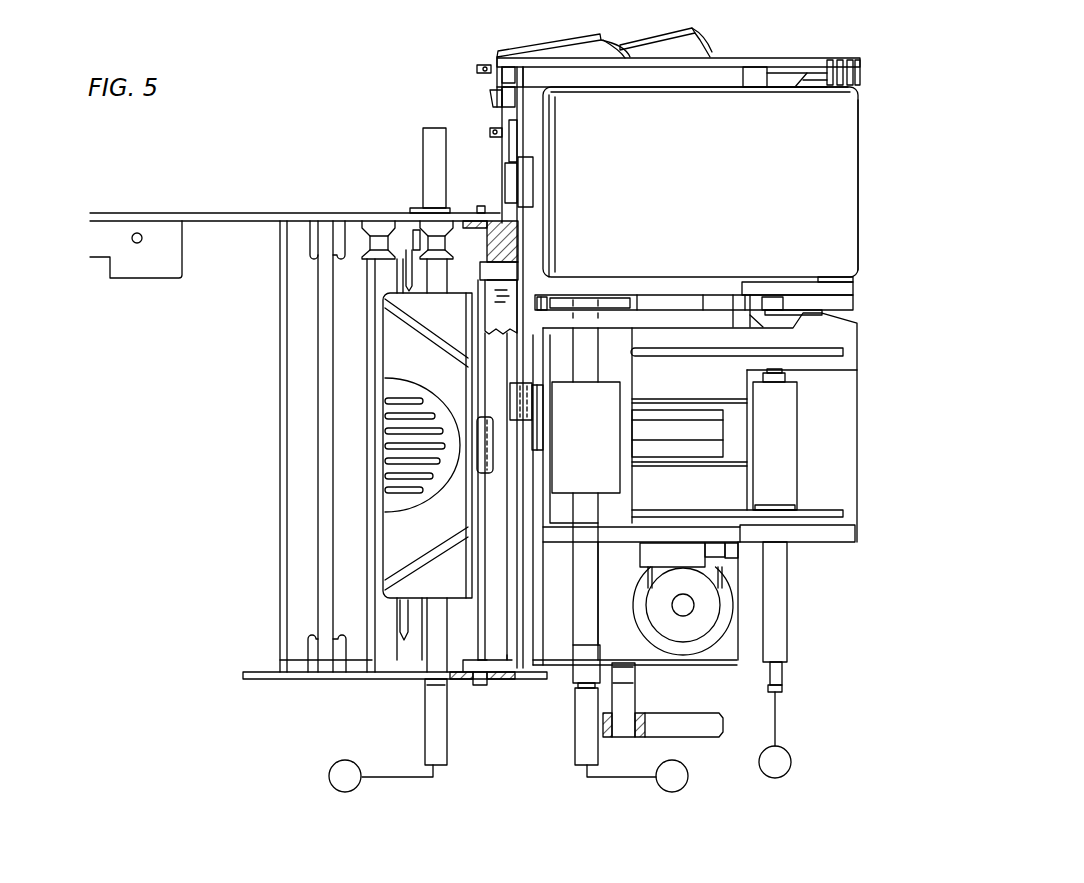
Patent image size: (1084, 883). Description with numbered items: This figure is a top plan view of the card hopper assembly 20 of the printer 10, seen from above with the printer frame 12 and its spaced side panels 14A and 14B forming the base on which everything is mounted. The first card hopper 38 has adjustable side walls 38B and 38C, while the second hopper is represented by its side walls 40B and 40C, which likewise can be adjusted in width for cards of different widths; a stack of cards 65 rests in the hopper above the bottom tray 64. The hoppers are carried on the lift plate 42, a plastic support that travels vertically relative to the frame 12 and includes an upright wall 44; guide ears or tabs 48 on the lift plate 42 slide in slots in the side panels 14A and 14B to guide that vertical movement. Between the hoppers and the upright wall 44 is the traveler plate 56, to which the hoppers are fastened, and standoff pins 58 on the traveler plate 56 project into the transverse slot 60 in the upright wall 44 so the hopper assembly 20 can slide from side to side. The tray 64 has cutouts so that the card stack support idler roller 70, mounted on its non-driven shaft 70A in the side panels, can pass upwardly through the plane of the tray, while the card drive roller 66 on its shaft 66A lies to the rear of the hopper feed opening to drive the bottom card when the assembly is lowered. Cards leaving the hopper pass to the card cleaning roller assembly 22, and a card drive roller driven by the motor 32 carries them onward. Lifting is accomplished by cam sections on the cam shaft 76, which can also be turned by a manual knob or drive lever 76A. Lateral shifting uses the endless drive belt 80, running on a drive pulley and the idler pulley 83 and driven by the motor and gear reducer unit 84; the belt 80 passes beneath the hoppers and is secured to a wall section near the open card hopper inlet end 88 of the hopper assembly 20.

The printer 10 is at (390, 157).
The printer housing or frame 12 is at (285, 205).
The side panel 14A is at (337, 221).
The side panel 14B is at (531, 680).
The card hopper assembly 20 is at (857, 345).
The card cleaning roller assembly 22 is at (392, 452).
The motor 32 is at (343, 760).
The first card hopper 38 is at (837, 247).
The side wall 38B is at (713, 288).
The side wall 38C is at (640, 77).
The side wall 40B is at (798, 533).
The side wall 40C is at (731, 323).
The lift plate 42 is at (364, 445).
The upright wall 44 is at (507, 240).
The guide ears or tabs 48 is at (480, 206).
The traveler plate 56 is at (513, 272).
The standoff pins 58 is at (500, 300).
The slot 60 is at (483, 318).
The tray 64 is at (730, 378).
The cards 65 is at (832, 193).
The card drive roller 66 is at (593, 433).
The shaft 66A is at (580, 603).
The card stack support idler roller 70 is at (780, 438).
The shaft 70A is at (782, 652).
The cam shaft 76 is at (628, 672).
The manual knob or drive lever 76A is at (680, 735).
The drive belt 80 is at (632, 580).
The idler pulley 83 is at (710, 608).
The motor and gear reducer unit 84 is at (552, 52).
The open card hopper inlet end 88 is at (873, 137).